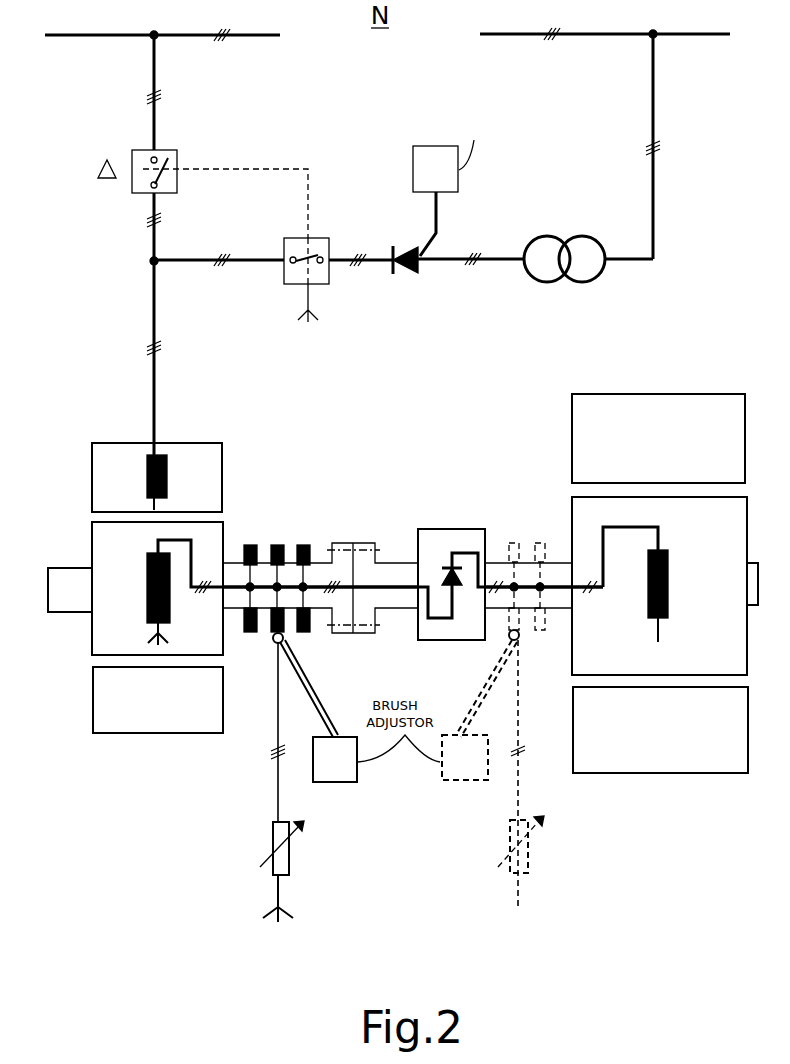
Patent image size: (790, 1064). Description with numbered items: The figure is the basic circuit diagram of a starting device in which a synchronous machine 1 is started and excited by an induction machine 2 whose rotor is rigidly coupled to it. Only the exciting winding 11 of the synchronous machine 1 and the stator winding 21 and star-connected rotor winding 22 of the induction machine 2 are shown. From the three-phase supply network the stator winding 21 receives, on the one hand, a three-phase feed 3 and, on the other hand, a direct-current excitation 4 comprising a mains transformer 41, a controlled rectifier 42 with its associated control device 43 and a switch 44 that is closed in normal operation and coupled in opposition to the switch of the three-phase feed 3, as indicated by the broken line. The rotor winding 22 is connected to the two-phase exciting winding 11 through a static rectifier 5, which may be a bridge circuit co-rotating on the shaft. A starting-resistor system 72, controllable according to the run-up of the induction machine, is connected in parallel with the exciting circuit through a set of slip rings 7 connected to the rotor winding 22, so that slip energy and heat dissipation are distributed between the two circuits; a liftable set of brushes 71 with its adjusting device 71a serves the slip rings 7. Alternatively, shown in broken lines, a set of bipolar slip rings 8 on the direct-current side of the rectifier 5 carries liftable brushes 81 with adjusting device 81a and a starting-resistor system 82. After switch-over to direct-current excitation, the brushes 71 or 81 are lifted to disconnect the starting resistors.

The synchronous machine 1 is at (663, 363).
The starting and exciting induction machine 2 is at (108, 422).
The three-phase feed 3 is at (107, 110).
The direct-current excitation 4 is at (575, 194).
The static rectifier 5 is at (453, 529).
The set of slip rings 7 is at (278, 543).
The set of bipolar slip rings 8 is at (515, 543).
The exciting winding 11 is at (647, 588).
The stator winding 21 is at (167, 468).
The rotor winding 22 is at (147, 580).
The mains transformer 41 is at (558, 281).
The controlled rectifier 42 is at (412, 273).
The control device 43 is at (413, 165).
The switch 44 is at (265, 246).
The set of brushes 71 is at (275, 643).
The adjusting device 71a is at (343, 773).
The starting-resistor system 72 is at (278, 860).
The set of brushes 81 is at (510, 640).
The adjusting device 81a is at (472, 780).
The starting-resistor system 82 is at (510, 857).